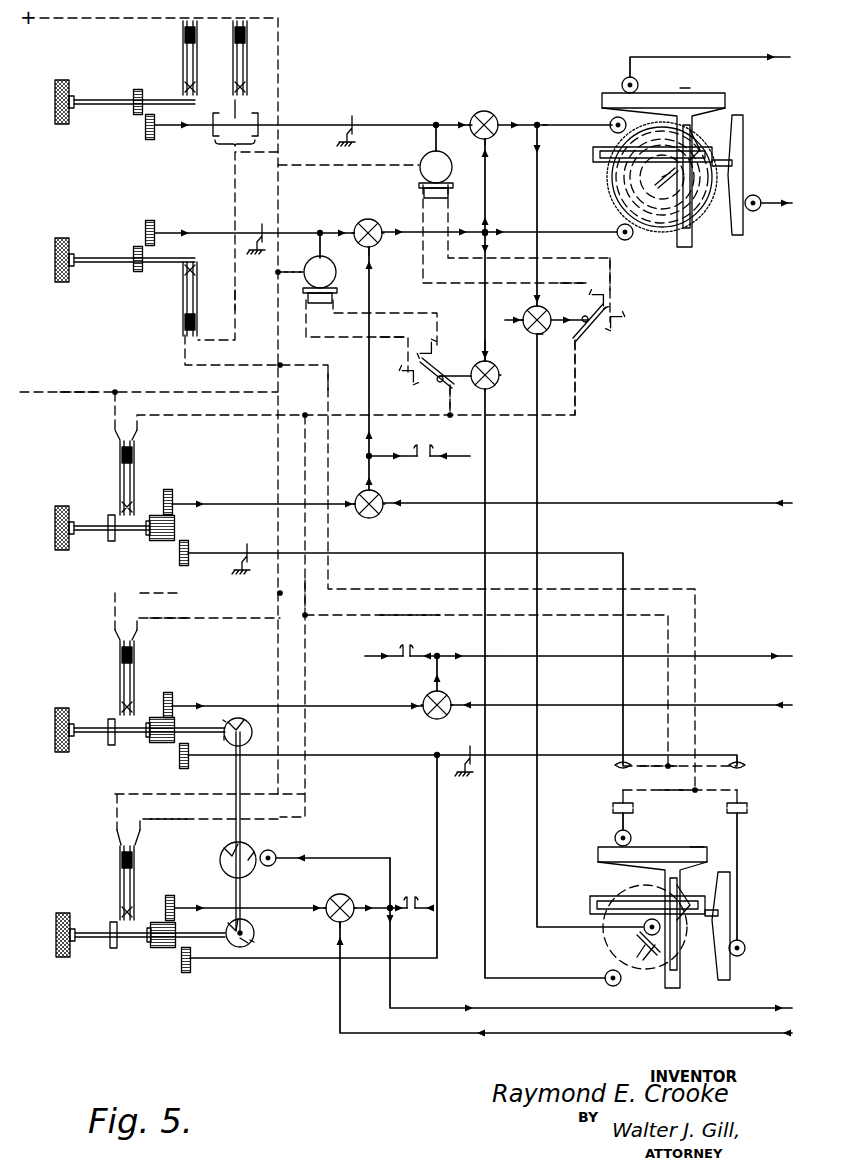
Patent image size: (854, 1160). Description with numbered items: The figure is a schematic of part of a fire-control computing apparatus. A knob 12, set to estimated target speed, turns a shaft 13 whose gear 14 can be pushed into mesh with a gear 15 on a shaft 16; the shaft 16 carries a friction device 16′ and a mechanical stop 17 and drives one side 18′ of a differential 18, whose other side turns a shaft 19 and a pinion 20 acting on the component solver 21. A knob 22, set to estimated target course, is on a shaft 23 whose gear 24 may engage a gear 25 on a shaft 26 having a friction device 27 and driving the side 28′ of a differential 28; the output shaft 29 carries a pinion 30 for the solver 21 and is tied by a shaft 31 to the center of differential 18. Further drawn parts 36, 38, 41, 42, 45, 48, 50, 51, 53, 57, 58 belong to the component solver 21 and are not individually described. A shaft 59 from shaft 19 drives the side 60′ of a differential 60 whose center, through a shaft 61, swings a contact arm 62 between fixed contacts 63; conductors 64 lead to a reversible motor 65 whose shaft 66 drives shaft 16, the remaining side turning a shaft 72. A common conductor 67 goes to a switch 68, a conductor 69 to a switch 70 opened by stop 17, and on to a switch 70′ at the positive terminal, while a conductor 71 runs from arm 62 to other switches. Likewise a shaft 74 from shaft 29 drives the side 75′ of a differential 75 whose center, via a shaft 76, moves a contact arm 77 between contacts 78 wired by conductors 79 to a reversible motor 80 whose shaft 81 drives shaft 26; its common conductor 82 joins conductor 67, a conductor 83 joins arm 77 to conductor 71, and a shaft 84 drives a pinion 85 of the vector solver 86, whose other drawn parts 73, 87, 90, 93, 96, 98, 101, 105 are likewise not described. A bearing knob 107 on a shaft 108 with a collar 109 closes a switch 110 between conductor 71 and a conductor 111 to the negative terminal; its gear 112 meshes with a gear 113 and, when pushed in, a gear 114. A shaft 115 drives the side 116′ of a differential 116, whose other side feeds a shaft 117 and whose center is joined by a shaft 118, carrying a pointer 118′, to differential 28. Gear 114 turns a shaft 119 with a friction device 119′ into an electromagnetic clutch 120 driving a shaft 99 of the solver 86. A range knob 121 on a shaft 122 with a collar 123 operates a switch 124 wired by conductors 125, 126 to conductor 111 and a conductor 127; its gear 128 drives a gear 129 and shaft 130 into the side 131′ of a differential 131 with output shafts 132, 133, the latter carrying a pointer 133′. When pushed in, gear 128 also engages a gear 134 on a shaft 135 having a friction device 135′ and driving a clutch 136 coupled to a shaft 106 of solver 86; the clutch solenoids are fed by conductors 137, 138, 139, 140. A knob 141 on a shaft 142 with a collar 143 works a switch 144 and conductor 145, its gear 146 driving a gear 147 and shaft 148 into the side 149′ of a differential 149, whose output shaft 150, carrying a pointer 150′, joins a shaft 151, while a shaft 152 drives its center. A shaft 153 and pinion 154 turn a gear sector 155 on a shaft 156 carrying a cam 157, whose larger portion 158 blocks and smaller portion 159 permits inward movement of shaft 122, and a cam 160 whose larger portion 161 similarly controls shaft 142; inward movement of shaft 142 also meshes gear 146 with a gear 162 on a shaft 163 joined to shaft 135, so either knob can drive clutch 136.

The knob 12 is at (68, 82).
The shaft 13 is at (100, 102).
The gear 14 is at (138, 88).
The gear 15 is at (148, 140).
The shaft 16 is at (165, 128).
The friction device 16′ is at (368, 116).
The mechanical stop 17 is at (235, 126).
The differential 18 is at (484, 112).
The side of differential 18 18′ is at (470, 122).
The shaft 19 is at (545, 124).
The pinion 20 is at (612, 118).
The component solver 21 is at (686, 90).
The knob 22 is at (68, 238).
The shaft 23 is at (100, 258).
The gear 24 is at (139, 274).
The gear 25 is at (150, 222).
The shaft 26 is at (212, 232).
The friction device 27 is at (262, 226).
The differential 28 is at (368, 218).
The side of differential 28 28′ is at (356, 230).
The shaft 29 is at (454, 232).
The pinion 30 is at (622, 240).
The shaft 31 is at (486, 171).
The disc 36 is at (608, 141).
The slide bar 38 is at (602, 172).
The pointer 41 is at (630, 178).
The disc circle 42 is at (613, 199).
The slider 45 is at (694, 130).
The cross bar 48 is at (606, 92).
The roller 50 is at (638, 87).
The output shaft 51 is at (628, 59).
The slide 53 is at (743, 173).
The roller 57 is at (754, 197).
The output shaft 58 is at (762, 200).
The shaft 59 is at (541, 210).
The differential 60 is at (524, 320).
The side of differential 60 60′ is at (535, 308).
The shaft 61 is at (563, 316).
The rotatable contact arm 62 is at (592, 330).
The fixed contacts 63 is at (585, 296).
The conductors 64 is at (570, 280).
The reversible motor 65 is at (424, 176).
The motor shaft 66 is at (434, 140).
The common conductor 67 is at (368, 165).
The switch 68 is at (180, 303).
The conductor 69 is at (236, 306).
The switch 70 is at (232, 74).
The switch 70′ is at (182, 58).
The conductor 71 is at (219, 416).
The shaft 72 is at (546, 348).
The roller 73 is at (644, 930).
The shaft 74 is at (484, 356).
The differential 75 is at (504, 375).
The side of differential 75 75′ is at (491, 363).
The shaft 76 is at (451, 375).
The contact arm 77 is at (443, 360).
The fixed contacts 78 is at (419, 360).
The conductors 79 is at (406, 335).
The reversible motor 80 is at (336, 279).
The motor shaft 81 is at (323, 243).
The common conductor 82 is at (304, 270).
The conductor 83 is at (449, 400).
The shaft 84 is at (487, 431).
The pinion 85 is at (609, 987).
The vector solver 86 is at (697, 842).
The disc 87 is at (604, 955).
The pawl 90 is at (640, 972).
The slider 93 is at (680, 891).
The cross bar 96 is at (600, 864).
The roller 98 is at (632, 838).
The shaft of vector solver 99 is at (618, 822).
The slide 101 is at (732, 972).
The roller 105 is at (746, 947).
The shaft of vector solver 106 is at (738, 854).
The knob 107 is at (56, 532).
The shaft 108 is at (97, 522).
The collar 109 is at (112, 541).
The switch 110 is at (116, 474).
The conductor 111 is at (94, 392).
The gear 112 is at (178, 529).
The gear 113 is at (174, 493).
The gear 114 is at (180, 562).
The shaft 115 is at (242, 504).
The differential 116 is at (360, 517).
The side of differential 116 116′ is at (358, 499).
The shaft 117 is at (422, 503).
The shaft 118 is at (373, 446).
The pointer 118′ is at (406, 441).
The shaft 119 is at (207, 556).
The friction device 119′ is at (247, 548).
The electromagnetic clutch 120 is at (608, 802).
The knob 121 is at (56, 735).
The shaft 122 is at (94, 725).
The collar 123 is at (113, 746).
The switch 124 is at (116, 684).
The conductor 125 is at (168, 595).
The conductor 126 is at (182, 619).
The conductor 127 is at (309, 594).
The wide-faced gear 128 is at (156, 744).
The gear 129 is at (174, 702).
The shaft 130 is at (326, 706).
The differential 131 is at (431, 715).
The side of differential 131 131′ is at (423, 700).
The shaft 132 is at (493, 705).
The shaft 133 is at (493, 656).
The pointer 133′ is at (414, 652).
The gear 134 is at (182, 768).
The shaft 135 is at (312, 756).
The friction device 135′ is at (466, 751).
The electromagnetic clutch 136 is at (750, 803).
The conductor 137 is at (300, 366).
The conductor 138 is at (680, 799).
The conductor 139 is at (660, 773).
The conductor 140 is at (428, 616).
The knob 141 is at (56, 939).
The shaft 142 is at (94, 940).
The collar 143 is at (114, 948).
The switch 144 is at (116, 892).
The conductor 145 is at (159, 820).
The wide-faced gear 146 is at (171, 950).
The gear 147 is at (180, 884).
The shaft 148 is at (254, 907).
The differential 149 is at (330, 922).
The side of differential 149 149′ is at (327, 904).
The shaft 150 is at (380, 914).
The pointer 150′ is at (397, 894).
The shaft 151 is at (390, 944).
The shaft 152 is at (338, 948).
The shaft 153 is at (340, 857).
The pinion 154 is at (275, 853).
The gear sector 155 is at (252, 872).
The shaft 156 is at (236, 766).
The cam 157 is at (252, 732).
The cam portion of greater radius 158 is at (226, 740).
The cam portion of lesser radius 159 is at (244, 726).
The cam 160 is at (258, 928).
The cam portion of greater diameter 161 is at (254, 942).
The gear 162 is at (184, 973).
The shaft 163 is at (437, 791).